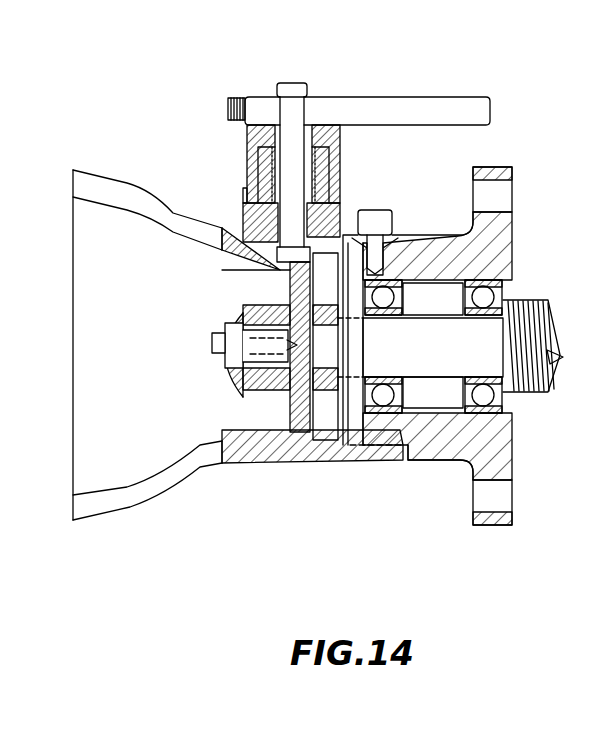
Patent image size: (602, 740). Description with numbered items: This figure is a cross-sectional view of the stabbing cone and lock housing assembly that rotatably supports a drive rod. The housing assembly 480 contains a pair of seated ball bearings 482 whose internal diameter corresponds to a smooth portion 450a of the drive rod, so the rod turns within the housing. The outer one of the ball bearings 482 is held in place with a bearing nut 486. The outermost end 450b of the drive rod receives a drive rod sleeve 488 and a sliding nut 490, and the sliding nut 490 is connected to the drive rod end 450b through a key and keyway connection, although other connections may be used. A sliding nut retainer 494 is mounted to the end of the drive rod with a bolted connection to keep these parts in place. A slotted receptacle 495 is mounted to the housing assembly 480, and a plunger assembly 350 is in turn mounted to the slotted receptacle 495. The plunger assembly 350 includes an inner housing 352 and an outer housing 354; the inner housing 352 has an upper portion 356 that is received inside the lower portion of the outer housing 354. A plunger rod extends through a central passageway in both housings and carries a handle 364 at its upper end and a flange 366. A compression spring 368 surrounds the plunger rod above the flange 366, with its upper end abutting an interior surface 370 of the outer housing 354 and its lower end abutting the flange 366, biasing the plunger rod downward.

The plunger assembly 350 is at (265, 70).
The inner housing 352 is at (252, 215).
The outer housing 354 is at (255, 165).
The upper portion 356 is at (335, 163).
The handle 364 is at (405, 96).
The flange 366 is at (330, 198).
The compression spring 368 is at (250, 186).
The interior surface 370 is at (262, 142).
The smooth portion 450a is at (500, 358).
The outermost end 450b is at (275, 327).
The housing assembly 480 is at (448, 160).
The ball bearings 482 is at (505, 282).
The bearing nut 486 is at (345, 420).
The drive rod sleeve 488 is at (288, 423).
The sliding nut 490 is at (260, 390).
The sliding nut retainer 494 is at (223, 370).
The slotted receptacle 495 is at (115, 253).